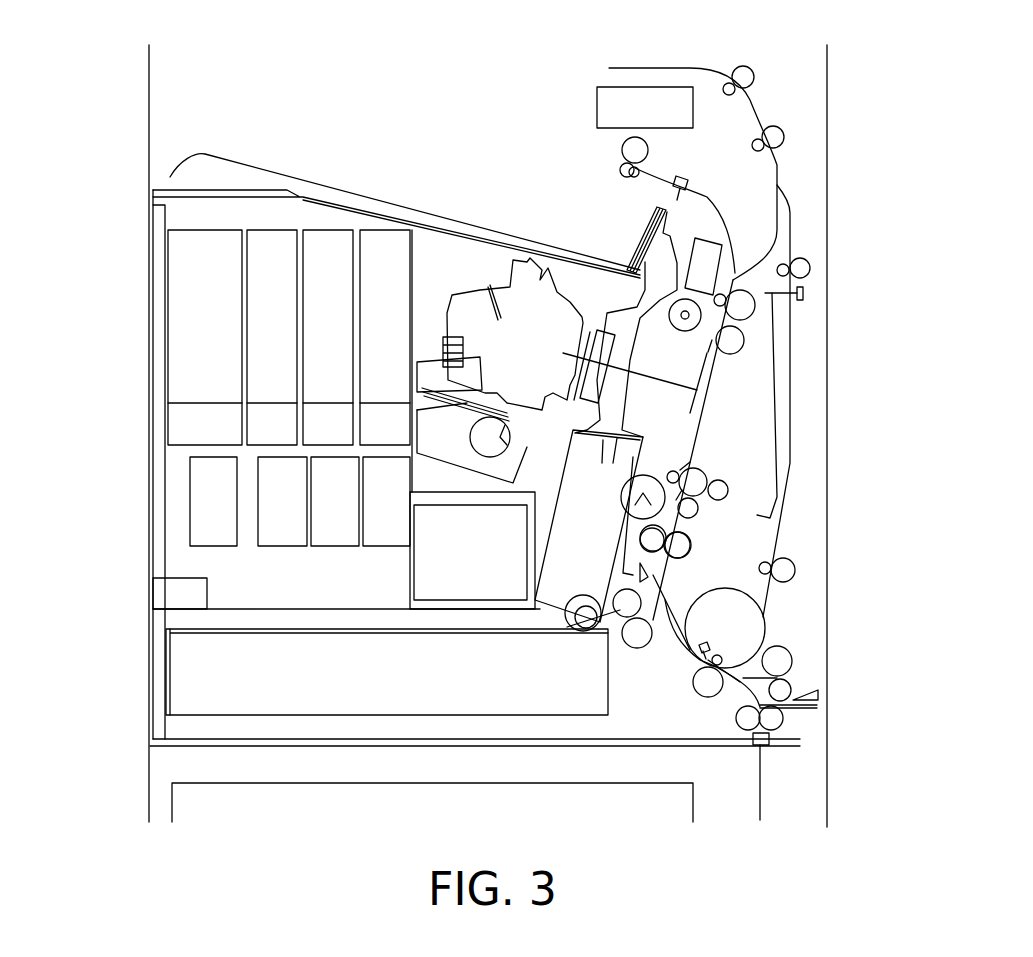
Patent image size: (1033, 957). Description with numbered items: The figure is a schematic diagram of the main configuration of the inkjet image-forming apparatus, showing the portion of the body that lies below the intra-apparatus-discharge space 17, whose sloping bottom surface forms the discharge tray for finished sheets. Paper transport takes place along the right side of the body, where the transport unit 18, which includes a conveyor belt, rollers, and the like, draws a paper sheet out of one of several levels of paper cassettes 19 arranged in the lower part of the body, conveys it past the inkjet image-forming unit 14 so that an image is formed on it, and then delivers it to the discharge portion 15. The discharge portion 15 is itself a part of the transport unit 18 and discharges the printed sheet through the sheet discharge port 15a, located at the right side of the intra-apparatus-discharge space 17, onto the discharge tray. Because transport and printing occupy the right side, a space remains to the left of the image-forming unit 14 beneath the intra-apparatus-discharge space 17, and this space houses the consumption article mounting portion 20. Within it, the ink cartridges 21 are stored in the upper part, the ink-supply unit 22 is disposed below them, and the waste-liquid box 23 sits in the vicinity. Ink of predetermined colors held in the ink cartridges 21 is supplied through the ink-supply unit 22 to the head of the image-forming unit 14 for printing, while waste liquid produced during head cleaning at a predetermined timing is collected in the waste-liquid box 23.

The image-forming unit 14 is at (583, 237).
The discharge portion 15 is at (838, 173).
The sheet discharge port 15a is at (610, 152).
The intra-apparatus-discharge space 17 is at (422, 147).
The transport unit 18 is at (892, 199).
The paper cassettes 19 is at (172, 807).
The consumption article mounting portion 20 is at (319, 472).
The ink cartridges 21 is at (135, 243).
The ink-supply unit 22 is at (135, 465).
The waste-liquid box 23 is at (311, 567).